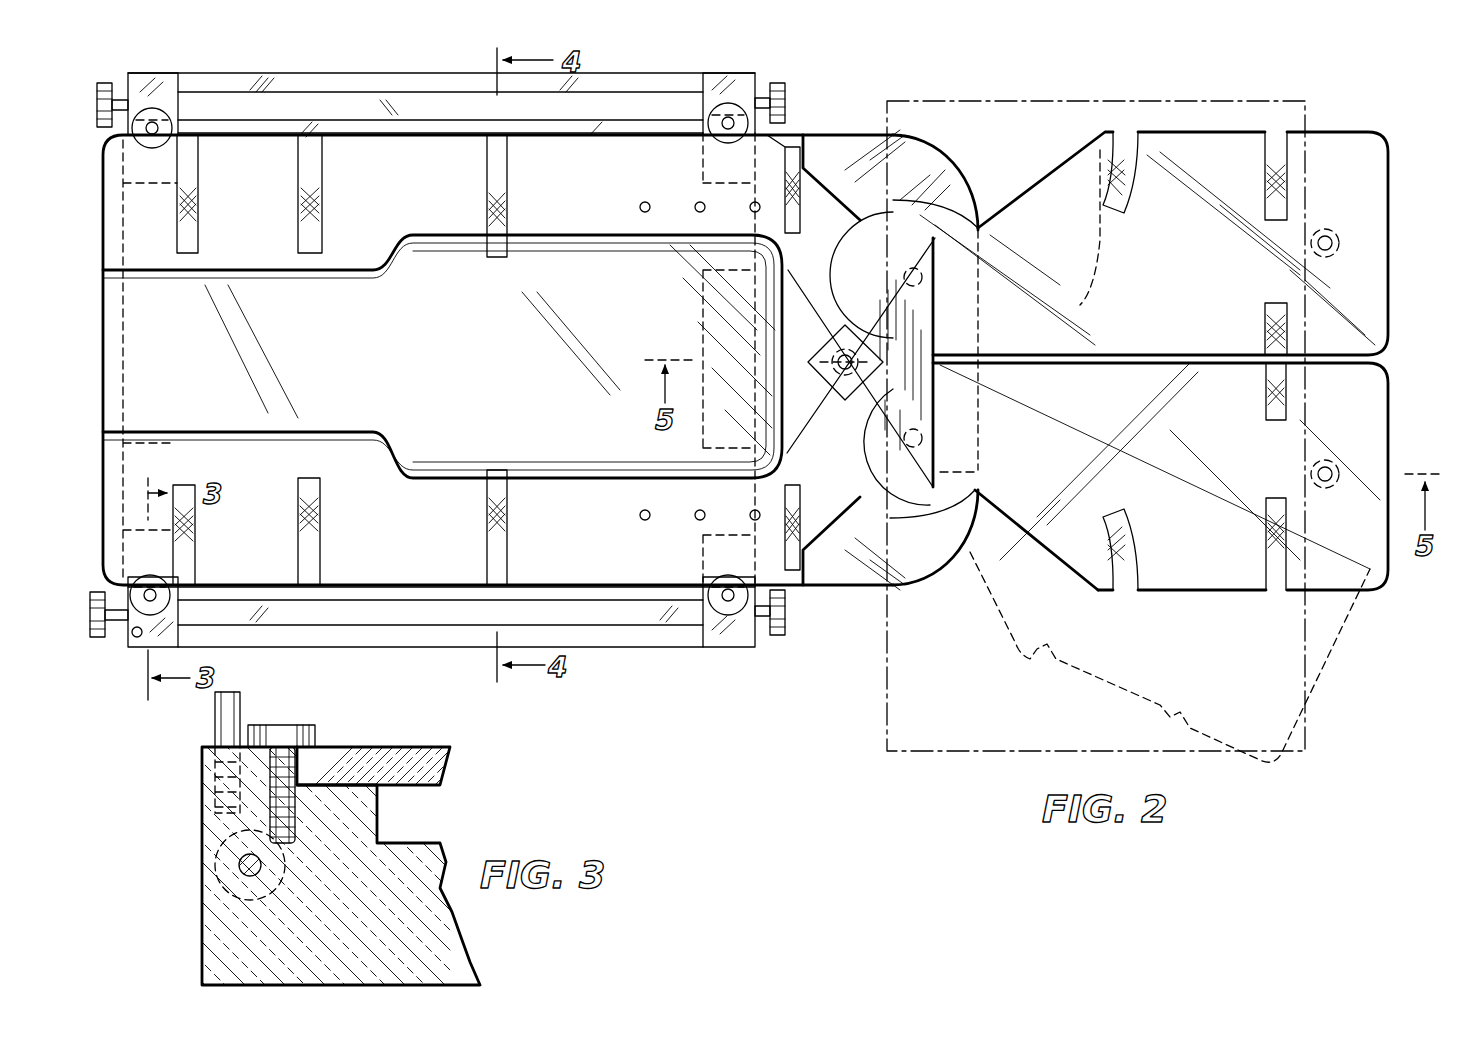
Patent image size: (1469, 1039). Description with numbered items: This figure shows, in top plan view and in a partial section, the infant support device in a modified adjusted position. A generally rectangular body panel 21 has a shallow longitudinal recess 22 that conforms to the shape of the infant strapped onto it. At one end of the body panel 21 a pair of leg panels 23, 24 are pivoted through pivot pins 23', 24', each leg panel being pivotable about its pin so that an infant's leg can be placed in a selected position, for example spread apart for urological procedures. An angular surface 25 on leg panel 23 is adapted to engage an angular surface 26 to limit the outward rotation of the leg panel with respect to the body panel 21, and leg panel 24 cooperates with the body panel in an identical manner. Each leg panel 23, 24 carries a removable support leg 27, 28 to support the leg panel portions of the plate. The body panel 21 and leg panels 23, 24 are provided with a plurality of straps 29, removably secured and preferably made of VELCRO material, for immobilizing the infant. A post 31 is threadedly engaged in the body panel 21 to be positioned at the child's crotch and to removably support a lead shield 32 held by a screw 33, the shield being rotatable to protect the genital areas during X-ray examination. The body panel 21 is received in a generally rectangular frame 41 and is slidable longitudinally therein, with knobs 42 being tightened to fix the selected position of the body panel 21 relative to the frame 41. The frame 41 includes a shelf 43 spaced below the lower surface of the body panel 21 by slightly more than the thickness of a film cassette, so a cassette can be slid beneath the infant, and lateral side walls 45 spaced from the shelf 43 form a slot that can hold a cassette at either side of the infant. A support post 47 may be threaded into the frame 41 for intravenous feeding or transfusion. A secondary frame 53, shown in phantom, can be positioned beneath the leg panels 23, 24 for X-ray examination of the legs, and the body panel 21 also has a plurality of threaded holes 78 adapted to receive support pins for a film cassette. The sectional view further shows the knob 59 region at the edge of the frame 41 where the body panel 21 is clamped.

In FIG. 2, the body panel 21 is at (410, 546).
In FIG. 3, the body panel 21 is at (416, 756).
In FIG. 2, the shallow longitudinal recess 22 is at (468, 353).
In FIG. 2, the leg panel 23 is at (1160, 562).
In FIG. 2, the pivot pin 23' is at (891, 447).
In FIG. 2, the leg panel 24 is at (1154, 211).
In FIG. 2, the pivot pin 24' is at (876, 275).
In FIG. 2, the angular surface 25 is at (1050, 560).
In FIG. 2, the angular surface 26 is at (853, 540).
In FIG. 2, the removable support leg 27 is at (1325, 466).
In FIG. 2, the removable support leg 28 is at (1329, 256).
In FIG. 2, the straps 29 is at (486, 179).
In FIG. 2, the post 31 is at (826, 385).
In FIG. 2, the lead shield 32 is at (926, 305).
In FIG. 2, the screw 33 is at (841, 355).
In FIG. 2, the frame 41 is at (626, 649).
In FIG. 3, the frame 41 is at (200, 933).
In FIG. 2, the knobs 42 is at (739, 140).
In FIG. 3, the knobs 42 is at (300, 745).
In FIG. 3, the shelf 43 is at (398, 843).
In FIG. 2, the lateral side walls 45 is at (430, 75).
In FIG. 2, the support post 47 is at (134, 637).
In FIG. 3, the support post 47 is at (215, 723).
In FIG. 2, the secondary frame 53 is at (931, 756).
In FIG. 2, the thumb screw 59 is at (104, 86).
In FIG. 3, the thumb screw 59 is at (222, 848).
In FIG. 2, the threaded holes 78 is at (698, 206).